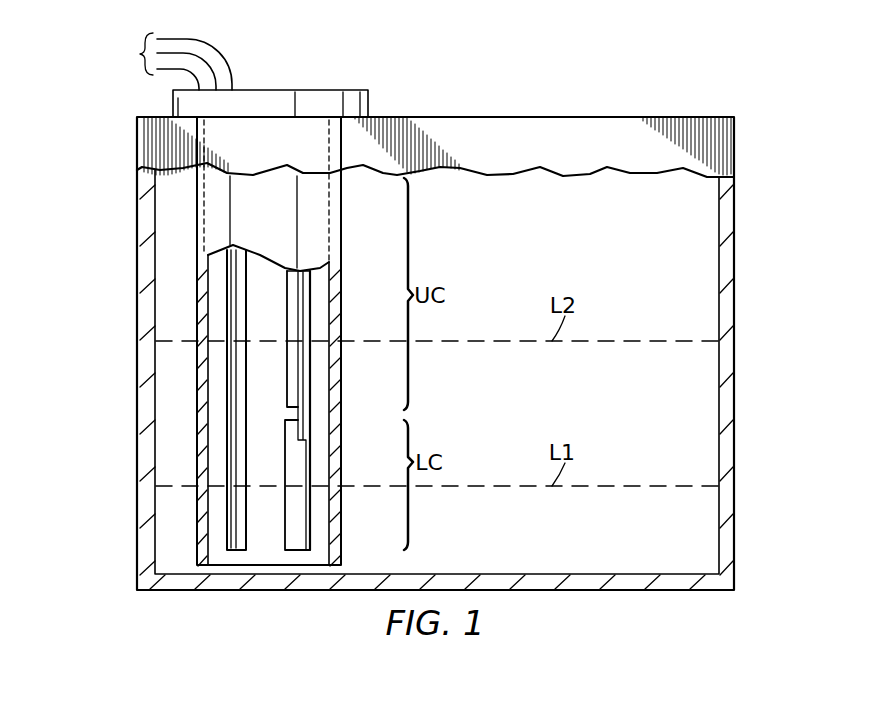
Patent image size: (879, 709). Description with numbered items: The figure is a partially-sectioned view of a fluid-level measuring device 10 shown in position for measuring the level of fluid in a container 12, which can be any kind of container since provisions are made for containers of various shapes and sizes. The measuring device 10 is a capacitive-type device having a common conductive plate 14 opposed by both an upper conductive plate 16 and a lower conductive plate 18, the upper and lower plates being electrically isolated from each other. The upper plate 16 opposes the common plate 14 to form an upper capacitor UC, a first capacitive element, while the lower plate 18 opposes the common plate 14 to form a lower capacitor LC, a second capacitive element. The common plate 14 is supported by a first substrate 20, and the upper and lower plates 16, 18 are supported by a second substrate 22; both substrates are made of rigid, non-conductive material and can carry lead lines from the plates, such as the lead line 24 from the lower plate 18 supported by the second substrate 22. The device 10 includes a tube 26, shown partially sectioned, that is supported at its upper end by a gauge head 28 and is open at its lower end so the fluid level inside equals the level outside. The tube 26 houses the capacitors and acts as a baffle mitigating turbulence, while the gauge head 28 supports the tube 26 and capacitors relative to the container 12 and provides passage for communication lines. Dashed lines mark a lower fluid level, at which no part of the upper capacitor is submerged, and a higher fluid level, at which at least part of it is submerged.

The fluid-level measuring device 10 is at (435, 303).
The container 12 is at (470, 117).
The common conductive plate 14 is at (237, 407).
The upper conductive plate 16 is at (290, 275).
The lower conductive plate 18 is at (325, 405).
The first substrate 20 is at (230, 258).
The second substrate 22 is at (305, 467).
The lead line 24 is at (307, 305).
The tube 26 is at (343, 238).
The gauge head 28 is at (268, 88).